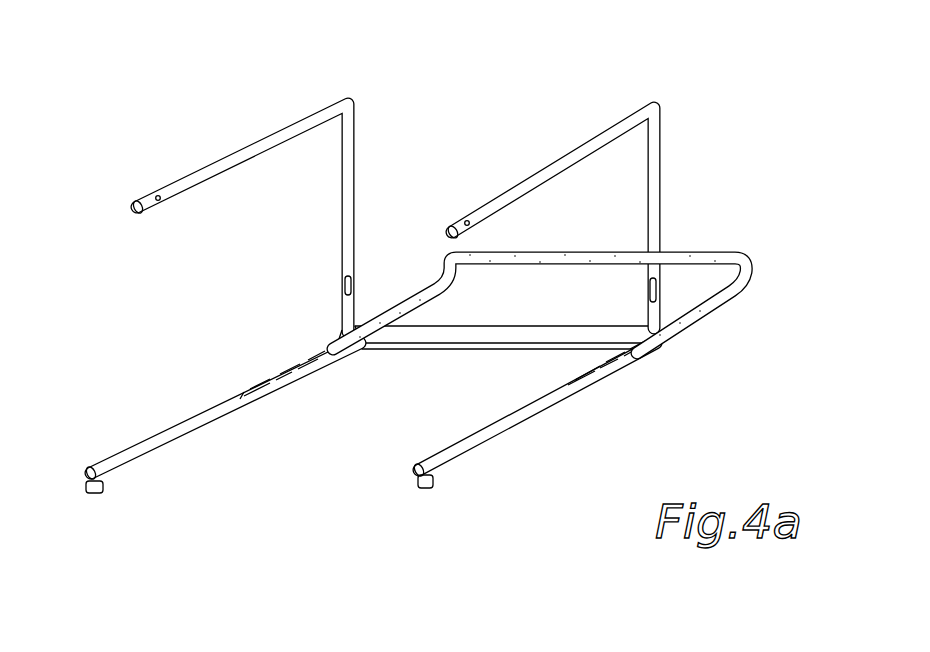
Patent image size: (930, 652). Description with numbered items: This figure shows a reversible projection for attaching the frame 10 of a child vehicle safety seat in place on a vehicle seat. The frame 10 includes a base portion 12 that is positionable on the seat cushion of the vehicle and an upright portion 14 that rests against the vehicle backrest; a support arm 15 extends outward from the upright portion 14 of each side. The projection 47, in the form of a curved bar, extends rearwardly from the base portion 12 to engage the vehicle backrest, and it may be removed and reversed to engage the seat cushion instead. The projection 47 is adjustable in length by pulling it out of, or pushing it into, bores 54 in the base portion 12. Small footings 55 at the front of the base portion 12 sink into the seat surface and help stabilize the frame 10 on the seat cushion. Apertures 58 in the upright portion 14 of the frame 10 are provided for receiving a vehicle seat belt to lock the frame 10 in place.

The frame 10 is at (400, 120).
The base portion 12 is at (180, 437).
The upright portion 14 is at (445, 203).
The support arm 15 is at (240, 155).
The projection 47 is at (713, 255).
The bores 54 is at (303, 370).
The footings 55 is at (102, 497).
The apertures 58 is at (345, 285).